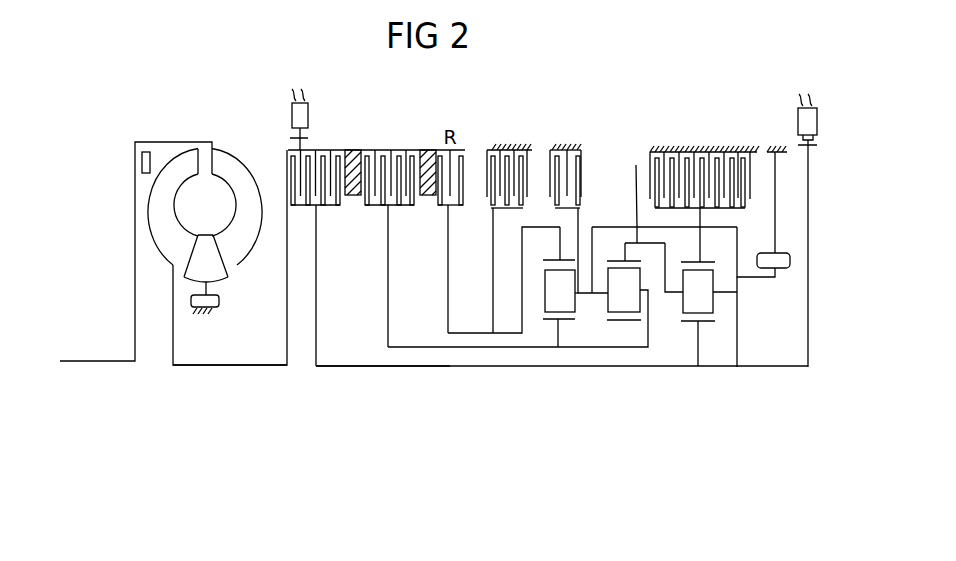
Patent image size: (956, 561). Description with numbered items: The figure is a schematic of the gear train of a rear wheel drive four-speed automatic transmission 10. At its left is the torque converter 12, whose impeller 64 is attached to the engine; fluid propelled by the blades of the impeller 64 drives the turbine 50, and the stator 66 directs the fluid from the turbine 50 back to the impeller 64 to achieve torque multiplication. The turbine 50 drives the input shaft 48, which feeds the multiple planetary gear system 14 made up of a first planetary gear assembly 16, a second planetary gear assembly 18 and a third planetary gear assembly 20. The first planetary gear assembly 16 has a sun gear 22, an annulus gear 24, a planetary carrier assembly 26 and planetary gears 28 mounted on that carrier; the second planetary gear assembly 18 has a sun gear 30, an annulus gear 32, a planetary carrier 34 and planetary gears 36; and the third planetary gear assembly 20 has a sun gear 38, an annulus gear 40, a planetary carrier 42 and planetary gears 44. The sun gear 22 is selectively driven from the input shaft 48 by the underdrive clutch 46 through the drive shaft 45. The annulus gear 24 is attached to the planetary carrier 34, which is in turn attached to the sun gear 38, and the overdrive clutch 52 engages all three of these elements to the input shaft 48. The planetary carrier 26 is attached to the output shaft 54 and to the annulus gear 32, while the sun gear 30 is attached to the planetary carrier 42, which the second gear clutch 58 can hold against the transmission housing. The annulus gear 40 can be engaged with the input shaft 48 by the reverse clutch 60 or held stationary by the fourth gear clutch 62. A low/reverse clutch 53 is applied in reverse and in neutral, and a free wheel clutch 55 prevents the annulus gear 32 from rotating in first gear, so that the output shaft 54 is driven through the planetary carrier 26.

The automatic transmission 10 is at (829, 82).
The torque converter 12 is at (161, 118).
The multiple planetary gear system 14 is at (521, 397).
The first planetary gear assembly 16 is at (717, 383).
The second planetary gear assembly 18 is at (588, 383).
The third planetary gear assembly 20 is at (562, 388).
The sun gear 22 is at (705, 322).
The annulus gear 24 is at (707, 262).
The planetary carrier assembly 26 is at (665, 292).
The planetary gears 28 is at (713, 312).
The sun gear 30 is at (615, 320).
The annulus gear 32 is at (633, 165).
The planetary carrier 34 is at (637, 243).
The planetary gears 36 is at (637, 300).
The sun gear 38 is at (552, 320).
The annulus gear 40 is at (551, 258).
The planetary carrier 42 is at (595, 290).
The planetary gears 44 is at (545, 290).
The drive shaft 45 is at (360, 366).
The underdrive clutch 46 is at (333, 158).
The input shaft 48 is at (180, 366).
The turbine 50 is at (148, 203).
The overdrive clutch 52 is at (370, 157).
The low/reverse clutch 53 is at (725, 160).
The output shaft 54 is at (812, 370).
The free wheel clutch 55 is at (788, 263).
The second gear clutch 58 is at (575, 160).
The reverse clutch 60 is at (435, 152).
The fourth gear clutch 62 is at (500, 160).
The impeller 64 is at (238, 173).
The stator 66 is at (215, 272).